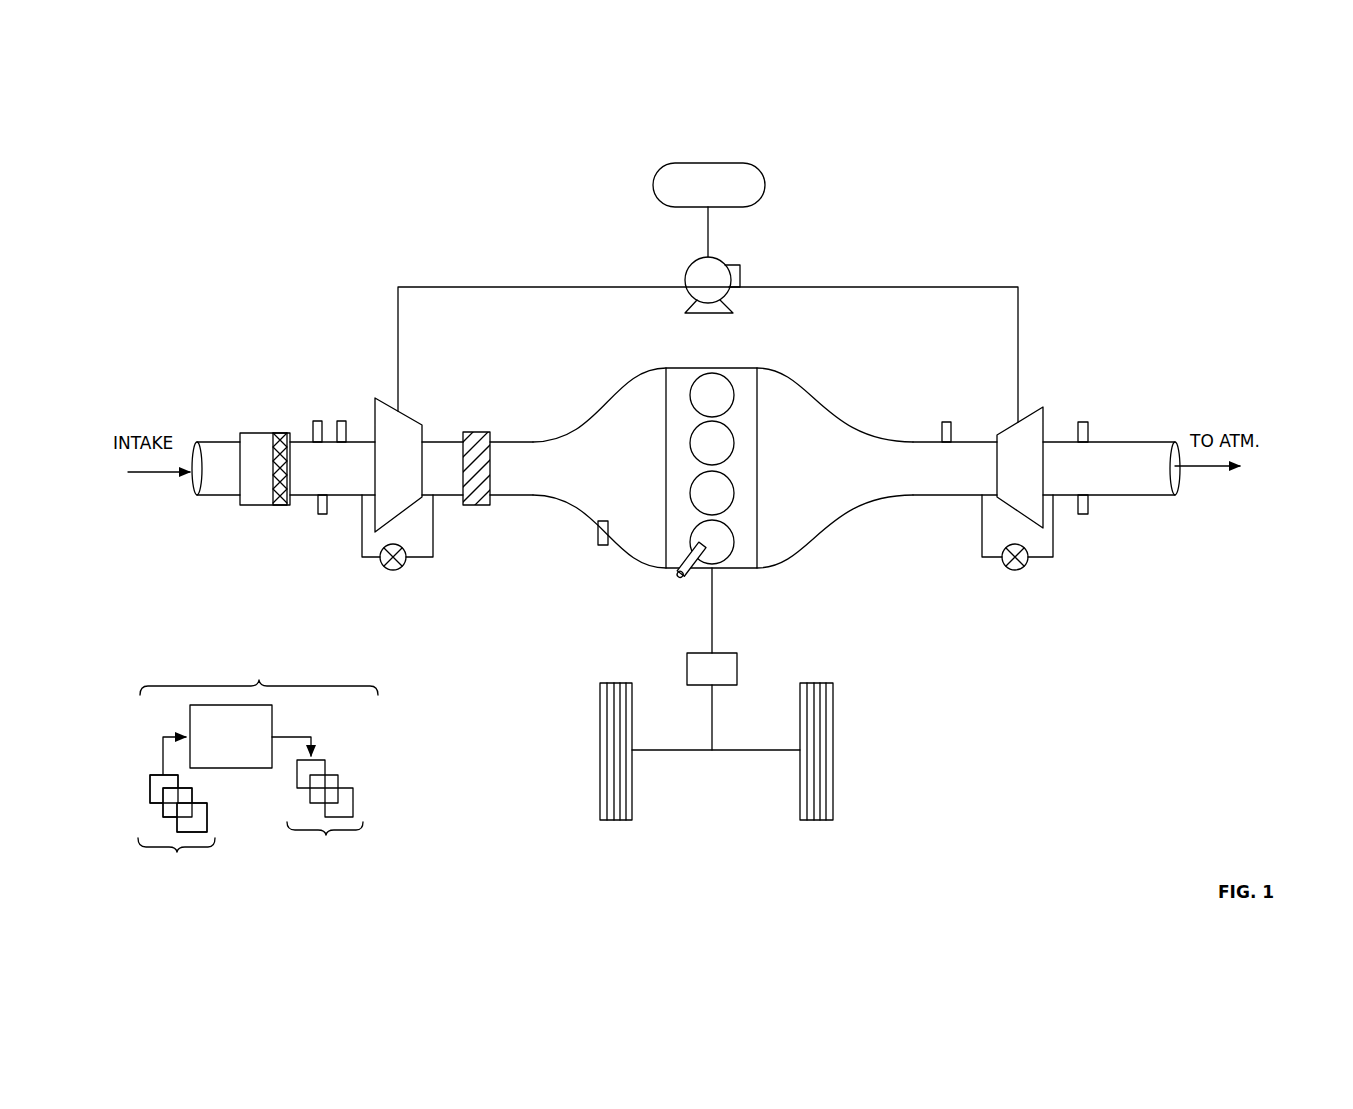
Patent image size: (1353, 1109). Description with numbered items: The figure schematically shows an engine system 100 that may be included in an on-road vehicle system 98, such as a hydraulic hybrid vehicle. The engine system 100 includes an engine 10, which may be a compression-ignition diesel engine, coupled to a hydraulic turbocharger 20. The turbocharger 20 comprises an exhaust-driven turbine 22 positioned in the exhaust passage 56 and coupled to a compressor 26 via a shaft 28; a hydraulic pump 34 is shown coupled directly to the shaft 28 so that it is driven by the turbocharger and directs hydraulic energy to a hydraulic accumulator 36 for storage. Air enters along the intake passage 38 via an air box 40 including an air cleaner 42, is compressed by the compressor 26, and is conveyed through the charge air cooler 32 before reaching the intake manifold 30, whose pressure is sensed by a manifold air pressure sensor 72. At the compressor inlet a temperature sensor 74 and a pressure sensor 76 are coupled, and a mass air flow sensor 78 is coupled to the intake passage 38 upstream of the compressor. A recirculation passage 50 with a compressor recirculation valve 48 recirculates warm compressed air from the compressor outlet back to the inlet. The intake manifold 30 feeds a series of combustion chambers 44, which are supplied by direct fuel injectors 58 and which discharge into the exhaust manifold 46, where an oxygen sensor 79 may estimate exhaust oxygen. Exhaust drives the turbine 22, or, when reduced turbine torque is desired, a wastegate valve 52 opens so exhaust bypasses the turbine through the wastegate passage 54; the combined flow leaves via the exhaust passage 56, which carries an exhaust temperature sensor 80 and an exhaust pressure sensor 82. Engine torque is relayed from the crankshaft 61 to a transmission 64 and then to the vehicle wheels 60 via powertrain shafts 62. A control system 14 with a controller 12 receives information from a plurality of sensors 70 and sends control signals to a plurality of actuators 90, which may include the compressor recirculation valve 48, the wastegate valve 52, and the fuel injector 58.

The engine 10 is at (758, 452).
The controller 12 is at (237, 740).
The control system 14 is at (259, 665).
The hydraulic turbocharger 20 is at (812, 285).
The turbine 22 is at (978, 467).
The compressor 26 is at (419, 465).
The shaft 28 is at (862, 289).
The intake manifold 30 is at (599, 468).
The charge air cooler 32 is at (480, 432).
The hydraulic pump 34 is at (712, 260).
The hydraulic accumulator 36 is at (709, 185).
The intake passage 38 is at (208, 497).
The air box 40 is at (247, 512).
The air cleaner 42 is at (280, 432).
The combustion chambers 44 is at (731, 385).
The exhaust manifold 46 is at (835, 468).
The compressor recirculation valve 48 is at (389, 572).
The recirculation passage 50 is at (433, 563).
The wastegate valve 52 is at (1012, 570).
The wastegate passage 54 is at (1053, 563).
The exhaust passage 56 is at (1137, 441).
The direct fuel injectors 58 is at (680, 580).
The vehicle wheels 60 is at (833, 683).
The crankshaft 61 is at (712, 600).
The powertrain shafts 62 is at (665, 752).
The transmission 64 is at (712, 669).
The sensors 70 is at (177, 834).
The manifold air pressure sensor 72 is at (597, 547).
The temperature sensor 74 is at (316, 420).
The pressure sensor 76 is at (340, 420).
The mass air flow sensor 78 is at (323, 515).
The oxygen sensor 79 is at (945, 420).
The exhaust temperature sensor 80 is at (1081, 515).
The exhaust pressure sensor 82 is at (1083, 421).
The actuators 90 is at (330, 819).
The on-road vehicle system 98 is at (1082, 705).
The engine system 100 is at (1082, 235).